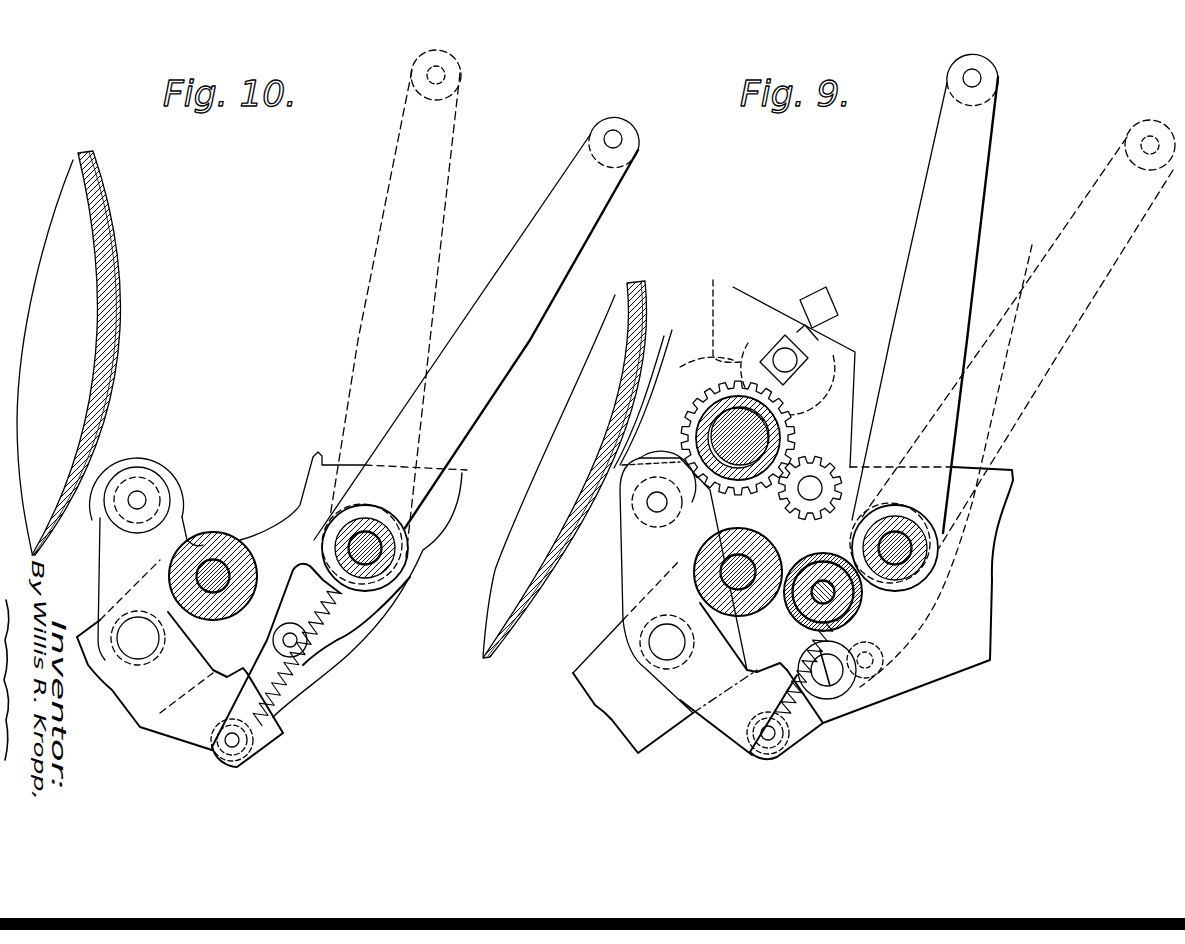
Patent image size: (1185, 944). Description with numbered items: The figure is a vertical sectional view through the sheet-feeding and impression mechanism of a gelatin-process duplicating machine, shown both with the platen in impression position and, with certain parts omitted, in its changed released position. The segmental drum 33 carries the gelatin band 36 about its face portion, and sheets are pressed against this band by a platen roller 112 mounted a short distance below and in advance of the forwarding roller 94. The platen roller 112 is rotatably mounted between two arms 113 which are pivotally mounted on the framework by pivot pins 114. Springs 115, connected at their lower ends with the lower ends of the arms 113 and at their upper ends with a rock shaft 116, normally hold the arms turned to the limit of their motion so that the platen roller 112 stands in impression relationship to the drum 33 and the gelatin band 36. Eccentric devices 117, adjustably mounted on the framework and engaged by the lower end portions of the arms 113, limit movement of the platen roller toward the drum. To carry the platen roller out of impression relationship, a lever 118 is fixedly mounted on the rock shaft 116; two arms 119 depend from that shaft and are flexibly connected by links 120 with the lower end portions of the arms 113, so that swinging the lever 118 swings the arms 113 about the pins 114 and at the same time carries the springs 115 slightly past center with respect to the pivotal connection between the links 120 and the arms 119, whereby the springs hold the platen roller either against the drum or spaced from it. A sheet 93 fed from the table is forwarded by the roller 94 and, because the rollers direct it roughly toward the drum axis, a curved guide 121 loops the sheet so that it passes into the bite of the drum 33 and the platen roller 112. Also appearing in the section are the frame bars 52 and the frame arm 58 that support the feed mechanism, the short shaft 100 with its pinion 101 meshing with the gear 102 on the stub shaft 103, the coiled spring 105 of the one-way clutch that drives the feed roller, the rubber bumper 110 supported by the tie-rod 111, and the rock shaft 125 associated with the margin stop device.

In FIG. 10, the drum 33 is at (72, 190).
In FIG. 9, the drum 33 is at (616, 305).
In FIG. 10, the gelatin band 36 is at (114, 196).
In FIG. 9, the gelatin band 36 is at (648, 330).
In FIG. 10, the frame bars 52 is at (423, 553).
In FIG. 9, the frame bars 52 is at (968, 663).
In FIG. 10, the arm 58 is at (147, 713).
In FIG. 9, the arm 58 is at (655, 730).
In FIG. 9, the sheet 93 is at (660, 345).
In FIG. 9, the forwarding roller 94 is at (777, 320).
In FIG. 9, the short shaft 100 is at (790, 470).
In FIG. 9, the pinion 101 is at (812, 486).
In FIG. 9, the gear 102 is at (820, 405).
In FIG. 9, the stub shaft 103 is at (743, 452).
In FIG. 9, the coiled spring 105 is at (780, 430).
In FIG. 9, the bumper 110 is at (823, 583).
In FIG. 9, the tie-rod 111 is at (800, 603).
In FIG. 10, the platen roller 112 is at (130, 458).
In FIG. 9, the platen roller 112 is at (617, 530).
In FIG. 10, the arms 113 is at (112, 567).
In FIG. 9, the arms 113 is at (635, 563).
In FIG. 10, the pivot pins 114 is at (143, 652).
In FIG. 9, the pivot pins 114 is at (678, 652).
In FIG. 10, the springs 115 is at (293, 673).
In FIG. 9, the springs 115 is at (820, 733).
In FIG. 10, the rock shaft 116 is at (350, 540).
In FIG. 9, the rock shaft 116 is at (905, 552).
In FIG. 9, the eccentric devices 117 is at (830, 703).
In FIG. 10, the lever 118 is at (553, 200).
In FIG. 9, the lever 118 is at (1093, 183).
In FIG. 10, the arms 119 is at (360, 610).
In FIG. 9, the arms 119 is at (935, 613).
In FIG. 10, the links 120 is at (288, 693).
In FIG. 9, the links 120 is at (833, 703).
In FIG. 9, the curved guide 121 is at (713, 300).
In FIG. 10, the rock shaft 125 is at (208, 565).
In FIG. 9, the rock shaft 125 is at (740, 573).